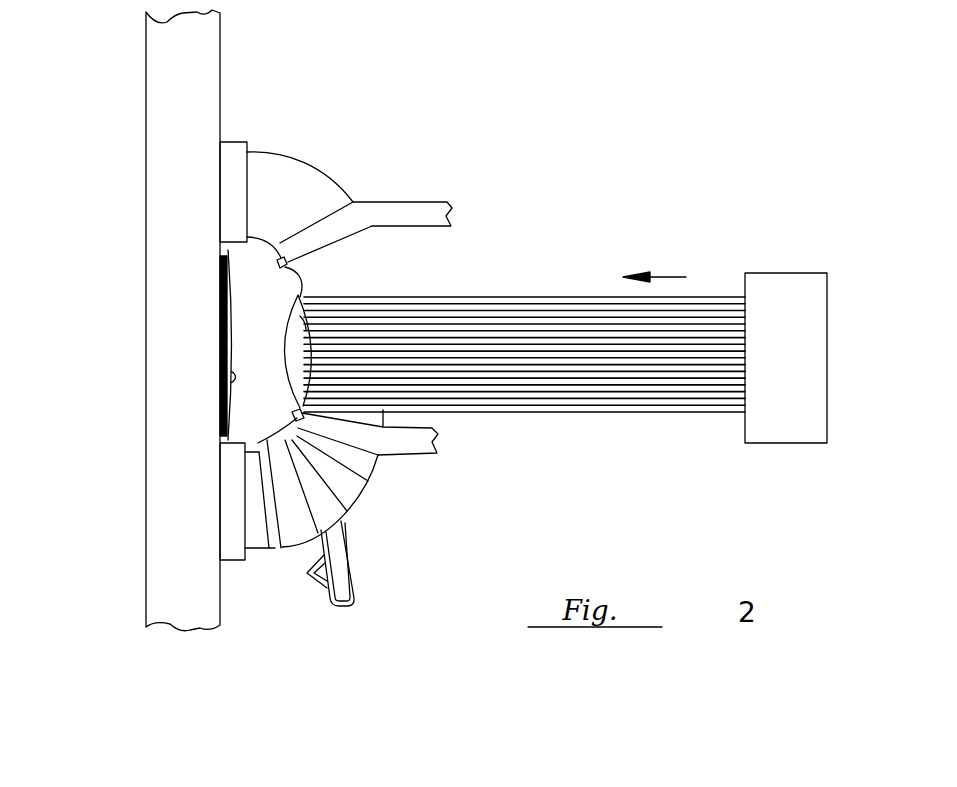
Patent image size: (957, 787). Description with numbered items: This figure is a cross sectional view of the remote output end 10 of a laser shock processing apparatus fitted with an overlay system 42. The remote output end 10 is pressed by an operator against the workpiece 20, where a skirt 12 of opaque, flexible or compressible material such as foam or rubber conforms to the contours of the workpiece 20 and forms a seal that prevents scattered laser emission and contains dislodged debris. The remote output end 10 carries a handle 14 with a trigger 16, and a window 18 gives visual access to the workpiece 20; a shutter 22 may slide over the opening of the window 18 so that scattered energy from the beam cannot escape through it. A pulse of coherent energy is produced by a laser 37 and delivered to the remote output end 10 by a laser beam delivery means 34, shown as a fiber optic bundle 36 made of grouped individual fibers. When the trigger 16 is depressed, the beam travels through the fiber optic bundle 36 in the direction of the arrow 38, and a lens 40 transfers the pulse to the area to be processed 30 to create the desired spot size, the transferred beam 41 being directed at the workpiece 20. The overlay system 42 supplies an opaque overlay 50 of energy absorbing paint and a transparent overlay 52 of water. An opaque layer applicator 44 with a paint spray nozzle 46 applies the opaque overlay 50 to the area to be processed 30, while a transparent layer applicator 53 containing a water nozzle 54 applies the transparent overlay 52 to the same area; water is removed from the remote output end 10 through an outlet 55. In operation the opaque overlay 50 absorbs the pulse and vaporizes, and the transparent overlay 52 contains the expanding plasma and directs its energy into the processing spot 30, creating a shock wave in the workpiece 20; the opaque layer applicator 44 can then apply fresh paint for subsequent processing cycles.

The remote output end 10 is at (326, 617).
The skirt 12 is at (235, 150).
The handle 14 is at (357, 575).
The trigger 16 is at (315, 578).
The window 18 is at (337, 497).
The workpiece 20 is at (210, 45).
The shutter 22 is at (370, 457).
The area to be processed 30 is at (242, 292).
The laser beam delivery means 34 is at (520, 421).
The fiber optic bundle 36 is at (613, 412).
The laser 37 is at (788, 290).
The arrow 38 is at (668, 272).
The lens 40 is at (300, 297).
The transferred beam 41 is at (247, 320).
The overlay system 42 is at (237, 274).
The opaque layer applicator 44 is at (420, 443).
The paint spray nozzle 46 is at (247, 443).
The opaque overlay 50 is at (220, 425).
The transparent overlay 52 is at (296, 409).
The transparent layer applicator 53 is at (424, 210).
The water nozzle 54 is at (287, 262).
The outlet 55 is at (275, 548).